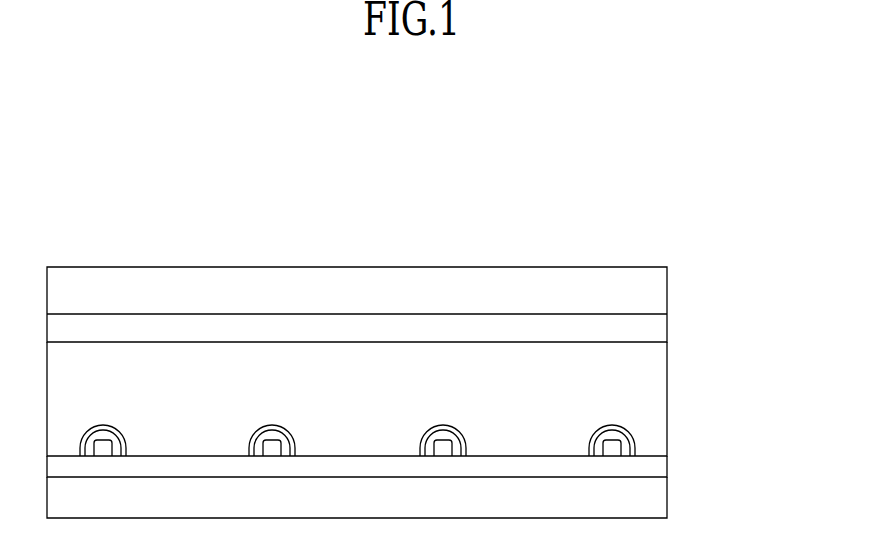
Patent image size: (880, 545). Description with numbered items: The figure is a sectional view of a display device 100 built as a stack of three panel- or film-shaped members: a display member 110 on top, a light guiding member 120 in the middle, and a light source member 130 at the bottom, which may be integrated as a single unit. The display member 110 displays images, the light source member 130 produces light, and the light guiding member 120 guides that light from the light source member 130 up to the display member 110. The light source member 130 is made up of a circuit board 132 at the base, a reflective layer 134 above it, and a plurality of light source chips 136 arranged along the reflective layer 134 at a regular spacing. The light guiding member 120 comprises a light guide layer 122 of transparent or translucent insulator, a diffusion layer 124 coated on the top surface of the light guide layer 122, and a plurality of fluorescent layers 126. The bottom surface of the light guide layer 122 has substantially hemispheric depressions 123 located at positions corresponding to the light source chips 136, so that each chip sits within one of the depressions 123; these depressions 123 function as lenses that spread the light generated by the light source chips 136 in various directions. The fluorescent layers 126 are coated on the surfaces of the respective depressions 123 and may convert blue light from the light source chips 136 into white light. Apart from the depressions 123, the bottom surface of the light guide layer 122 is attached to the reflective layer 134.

The display device 100 is at (403, 212).
The display member 110 is at (652, 293).
The light guiding member 120 is at (734, 318).
The light guide layer 122 is at (652, 358).
The depressions 123 is at (622, 432).
The diffusion layer 124 is at (653, 329).
The fluorescent layers 126 is at (608, 428).
The light source member 130 is at (735, 433).
The circuit board 132 is at (652, 498).
The reflective layer 134 is at (652, 469).
The light source chips 136 is at (619, 448).